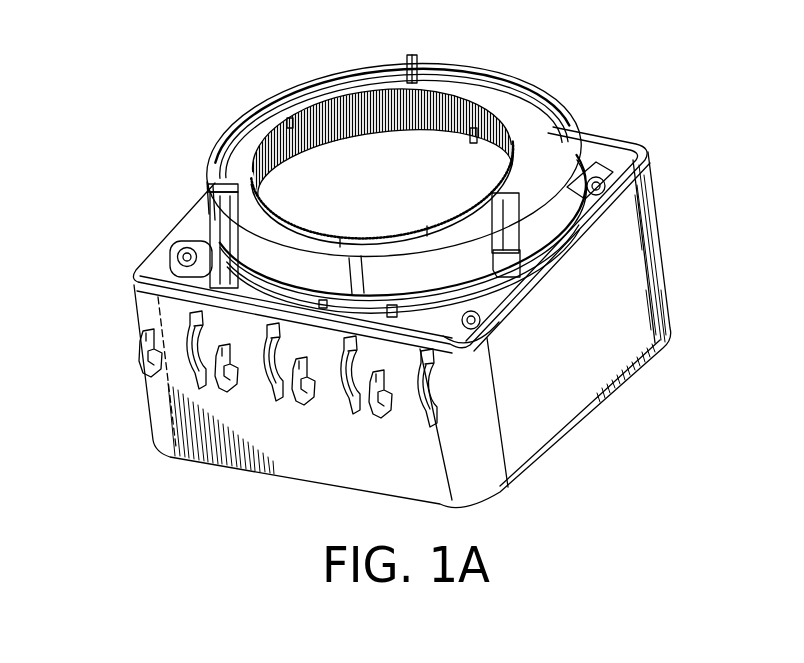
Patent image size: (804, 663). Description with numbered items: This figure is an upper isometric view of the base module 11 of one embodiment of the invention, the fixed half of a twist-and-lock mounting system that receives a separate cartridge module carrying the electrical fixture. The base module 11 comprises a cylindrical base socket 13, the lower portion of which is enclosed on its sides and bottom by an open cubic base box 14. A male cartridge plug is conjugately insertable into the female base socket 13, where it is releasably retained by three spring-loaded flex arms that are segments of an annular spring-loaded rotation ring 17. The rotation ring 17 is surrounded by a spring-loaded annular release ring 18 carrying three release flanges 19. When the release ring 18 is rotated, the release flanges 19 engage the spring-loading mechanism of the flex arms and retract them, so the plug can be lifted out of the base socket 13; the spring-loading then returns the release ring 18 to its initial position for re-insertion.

The base module 11 is at (578, 453).
The base socket 13 is at (421, 170).
The base box 14 is at (168, 434).
The rotation ring 17 is at (325, 112).
The release ring 18 is at (550, 108).
The release flanges 19 is at (414, 54).